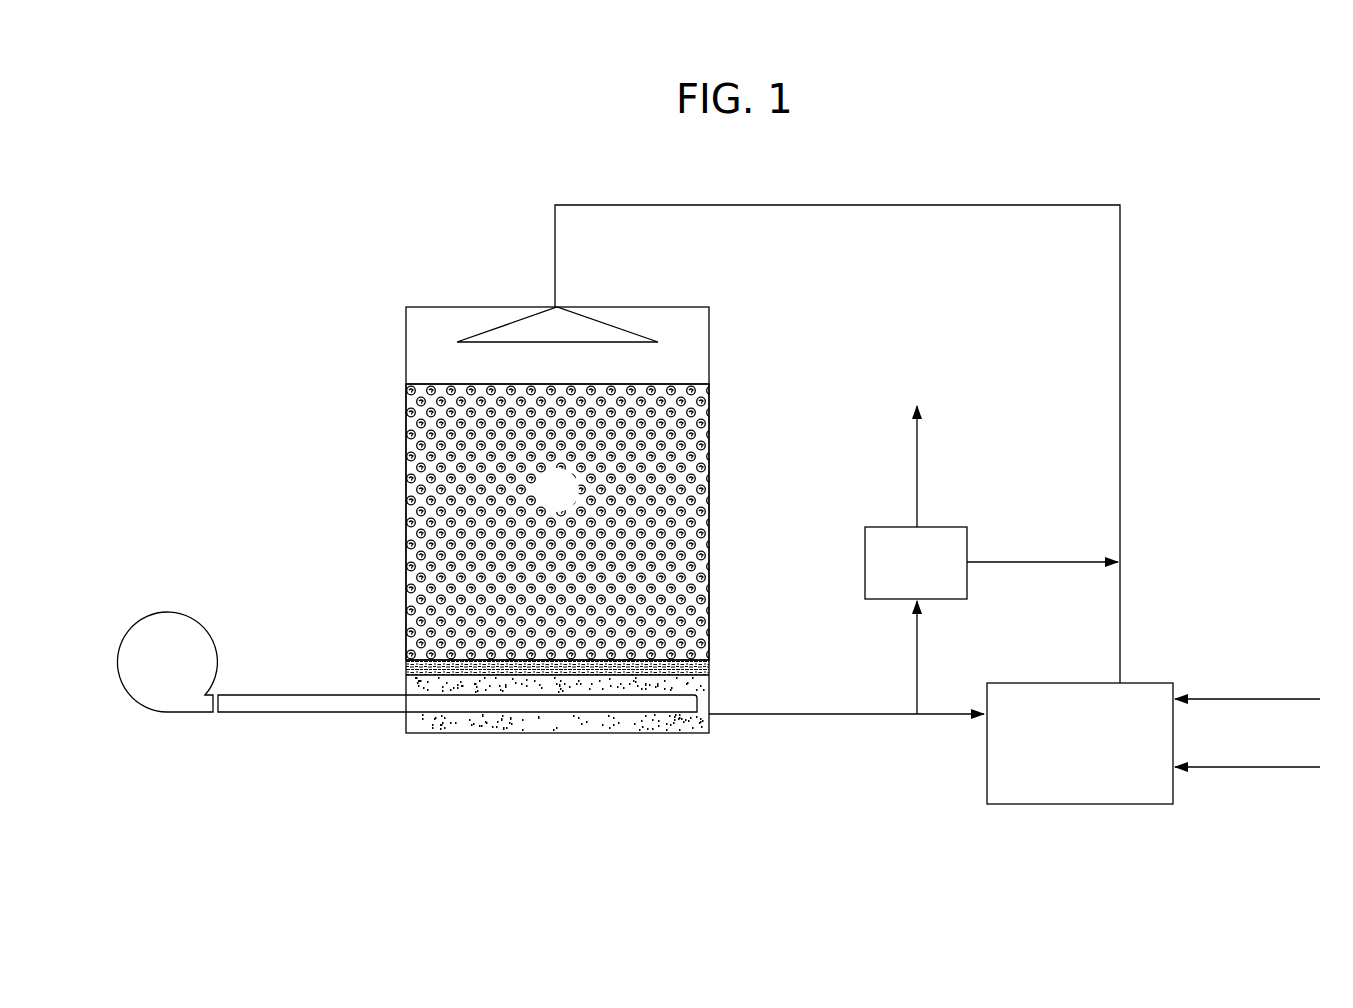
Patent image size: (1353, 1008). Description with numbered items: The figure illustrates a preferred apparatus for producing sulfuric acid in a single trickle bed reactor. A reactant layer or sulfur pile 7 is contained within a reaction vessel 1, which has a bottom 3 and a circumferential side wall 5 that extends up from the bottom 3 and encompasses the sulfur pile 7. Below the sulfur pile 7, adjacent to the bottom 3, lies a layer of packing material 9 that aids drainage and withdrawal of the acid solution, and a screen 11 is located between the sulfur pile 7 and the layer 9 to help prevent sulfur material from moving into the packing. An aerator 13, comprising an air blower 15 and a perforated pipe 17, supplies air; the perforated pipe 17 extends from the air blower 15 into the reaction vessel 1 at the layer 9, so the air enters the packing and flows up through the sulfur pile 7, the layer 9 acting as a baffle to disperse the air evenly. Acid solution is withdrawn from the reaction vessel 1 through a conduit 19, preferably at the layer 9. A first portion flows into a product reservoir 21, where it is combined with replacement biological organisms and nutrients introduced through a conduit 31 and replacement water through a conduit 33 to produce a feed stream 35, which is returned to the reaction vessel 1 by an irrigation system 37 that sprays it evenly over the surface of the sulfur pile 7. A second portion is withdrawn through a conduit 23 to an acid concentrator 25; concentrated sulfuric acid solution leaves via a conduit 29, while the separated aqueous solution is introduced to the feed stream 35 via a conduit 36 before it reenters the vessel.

The reaction vessel 1 is at (358, 445).
The bottom 3 is at (503, 733).
The circumferential side wall 5 is at (710, 500).
The sulfur pile 7 is at (566, 502).
The layer of packing material 9 is at (660, 726).
The screen 11 is at (710, 667).
The aerator 13 is at (246, 747).
The air blower 15 is at (140, 622).
The perforated pipe 17 is at (343, 713).
The conduit 19 is at (824, 715).
The product reservoir 21 is at (1073, 805).
The conduit 23 is at (917, 655).
The acid concentrator 25 is at (967, 535).
The conduit 29 is at (917, 443).
The conduit 31 is at (1265, 698).
The conduit 33 is at (1275, 768).
The feed stream 35 is at (1120, 340).
The conduit 36 is at (1040, 565).
The irrigation system 37 is at (615, 325).